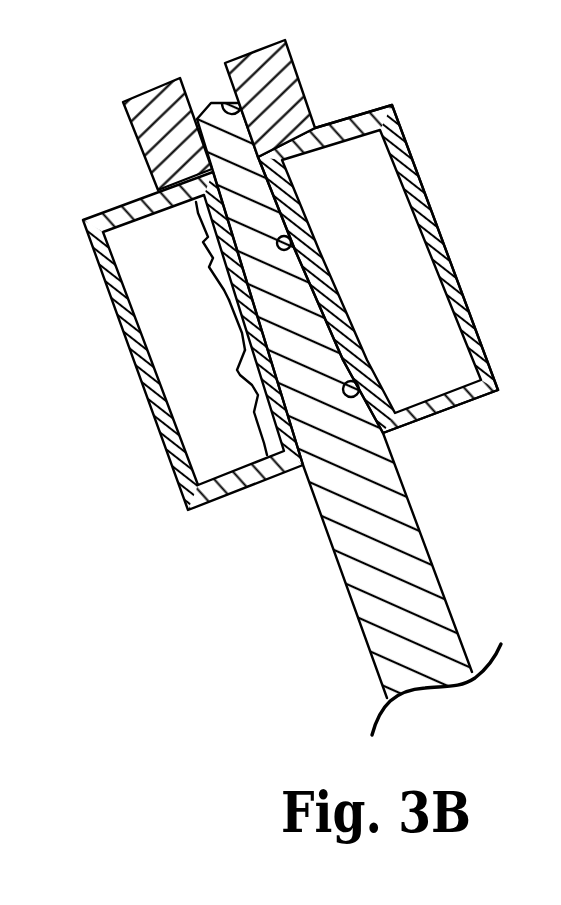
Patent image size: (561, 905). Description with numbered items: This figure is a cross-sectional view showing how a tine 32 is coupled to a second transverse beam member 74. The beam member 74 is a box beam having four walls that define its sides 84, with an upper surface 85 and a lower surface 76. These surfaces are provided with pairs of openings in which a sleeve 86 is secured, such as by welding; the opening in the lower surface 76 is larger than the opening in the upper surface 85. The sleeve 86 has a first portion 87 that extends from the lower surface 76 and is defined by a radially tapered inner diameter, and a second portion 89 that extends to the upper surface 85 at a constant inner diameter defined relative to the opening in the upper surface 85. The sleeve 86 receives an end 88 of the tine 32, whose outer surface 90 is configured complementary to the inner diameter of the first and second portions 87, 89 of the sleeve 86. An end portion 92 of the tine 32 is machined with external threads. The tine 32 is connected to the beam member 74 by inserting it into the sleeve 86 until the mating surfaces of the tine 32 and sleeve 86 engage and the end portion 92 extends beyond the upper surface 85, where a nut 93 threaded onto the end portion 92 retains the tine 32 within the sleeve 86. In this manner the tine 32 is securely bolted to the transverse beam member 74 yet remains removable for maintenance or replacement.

The tine 32 is at (349, 419).
The second transverse beam member 74 is at (393, 255).
The lower surface 76 is at (456, 413).
The sides 84 is at (408, 168).
The upper surface 85 is at (357, 112).
The sleeve 86 is at (234, 268).
The first portion 87 is at (240, 377).
The end 88 is at (250, 206).
The second portion 89 is at (203, 250).
The outer surface 90 is at (290, 240).
The end portion 92 is at (213, 103).
The nut 93 is at (282, 79).